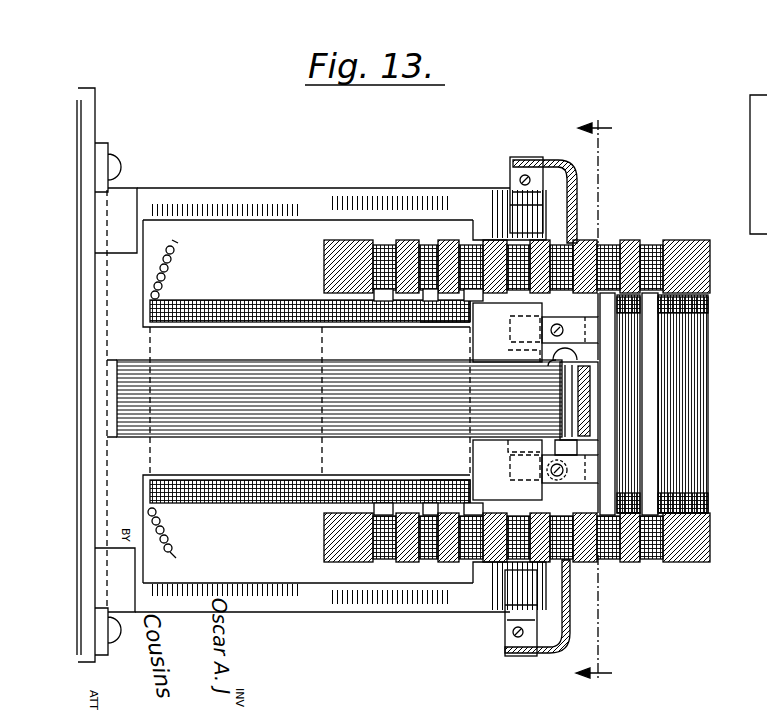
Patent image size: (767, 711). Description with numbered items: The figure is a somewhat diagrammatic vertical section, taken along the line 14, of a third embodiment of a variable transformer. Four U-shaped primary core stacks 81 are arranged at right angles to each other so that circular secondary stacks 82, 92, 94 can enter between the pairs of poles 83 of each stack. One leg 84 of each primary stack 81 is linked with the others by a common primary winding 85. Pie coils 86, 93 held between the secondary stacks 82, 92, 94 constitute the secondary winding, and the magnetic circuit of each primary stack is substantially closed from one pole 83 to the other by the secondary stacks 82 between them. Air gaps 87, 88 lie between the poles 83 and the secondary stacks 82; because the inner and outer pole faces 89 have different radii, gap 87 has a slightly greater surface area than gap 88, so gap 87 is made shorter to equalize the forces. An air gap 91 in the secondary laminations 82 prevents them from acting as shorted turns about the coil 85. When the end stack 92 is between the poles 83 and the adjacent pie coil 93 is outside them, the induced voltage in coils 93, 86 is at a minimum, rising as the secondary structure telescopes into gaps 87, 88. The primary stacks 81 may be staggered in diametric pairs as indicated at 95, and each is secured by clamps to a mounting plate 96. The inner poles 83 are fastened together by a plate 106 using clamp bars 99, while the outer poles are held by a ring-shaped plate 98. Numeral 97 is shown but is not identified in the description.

The section line 14- 14 is at (602, 400).
The U-shaped primary core stack 81 is at (262, 188).
The circular secondary stack 82 is at (582, 562).
The pole 83 is at (488, 195).
The leg 84 is at (190, 340).
The common primary winding 85 is at (266, 300).
The pie coil 86 is at (606, 245).
The air gap 87 is at (420, 322).
The air gap 88 is at (473, 240).
The pole face 89 is at (495, 305).
The air gap in secondary laminations 91 is at (690, 490).
The end stack 92 is at (345, 240).
The pie coil 93 is at (385, 245).
The secondary stack 94 is at (691, 562).
The stagger 95 is at (120, 437).
The mounting plate 96 is at (100, 87).
The bracket step 97 is at (140, 193).
The ring-shaped plate 98 is at (578, 172).
The clamp bar 99 is at (530, 157).
The plate 106 is at (590, 415).